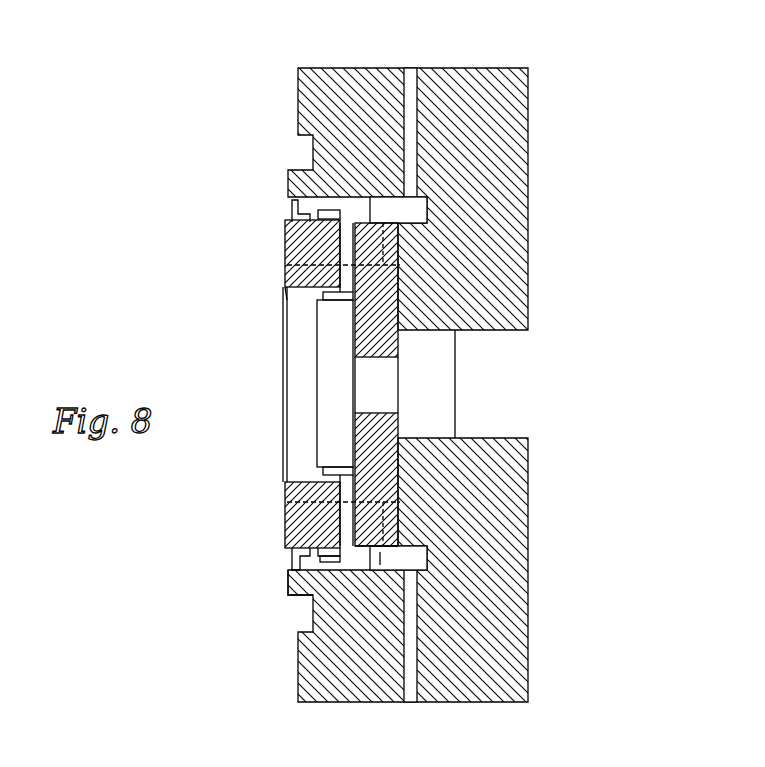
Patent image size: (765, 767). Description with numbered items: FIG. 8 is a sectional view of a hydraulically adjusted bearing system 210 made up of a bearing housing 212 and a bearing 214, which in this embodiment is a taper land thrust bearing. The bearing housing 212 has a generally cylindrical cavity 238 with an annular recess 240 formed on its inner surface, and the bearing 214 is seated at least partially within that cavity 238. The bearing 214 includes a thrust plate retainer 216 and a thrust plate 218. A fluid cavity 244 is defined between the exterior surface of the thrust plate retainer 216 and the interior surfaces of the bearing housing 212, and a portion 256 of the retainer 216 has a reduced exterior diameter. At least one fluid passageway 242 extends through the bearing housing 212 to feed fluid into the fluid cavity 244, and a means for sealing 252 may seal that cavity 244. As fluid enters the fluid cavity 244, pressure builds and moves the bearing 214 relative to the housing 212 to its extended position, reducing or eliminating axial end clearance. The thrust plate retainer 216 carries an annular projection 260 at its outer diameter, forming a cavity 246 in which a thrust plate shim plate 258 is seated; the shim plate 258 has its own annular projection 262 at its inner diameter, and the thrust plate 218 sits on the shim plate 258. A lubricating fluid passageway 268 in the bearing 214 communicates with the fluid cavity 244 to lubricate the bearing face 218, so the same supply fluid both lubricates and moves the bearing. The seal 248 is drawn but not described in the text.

The hydraulically adjusted bearing system 210 is at (136, 284).
The bearing housing 212 is at (340, 93).
The bearing 214 is at (280, 512).
The thrust plate retainer 216 is at (360, 340).
The thrust plate 218 is at (287, 245).
The cylindrical cavity 238 is at (407, 560).
The annular recess 240 is at (415, 575).
The fluid passageway 242 is at (410, 78).
The fluid cavity 244 is at (382, 197).
The cavity 246 is at (300, 528).
The seal 248 is at (292, 576).
The means for sealing 252 is at (370, 565).
The portion of reduced exterior diameter 256 is at (380, 553).
The thrust plate shim plate 258 is at (330, 306).
The annular projection 260 is at (312, 594).
The annular projection 262 is at (285, 212).
The lubricating fluid passageway 268 is at (283, 296).